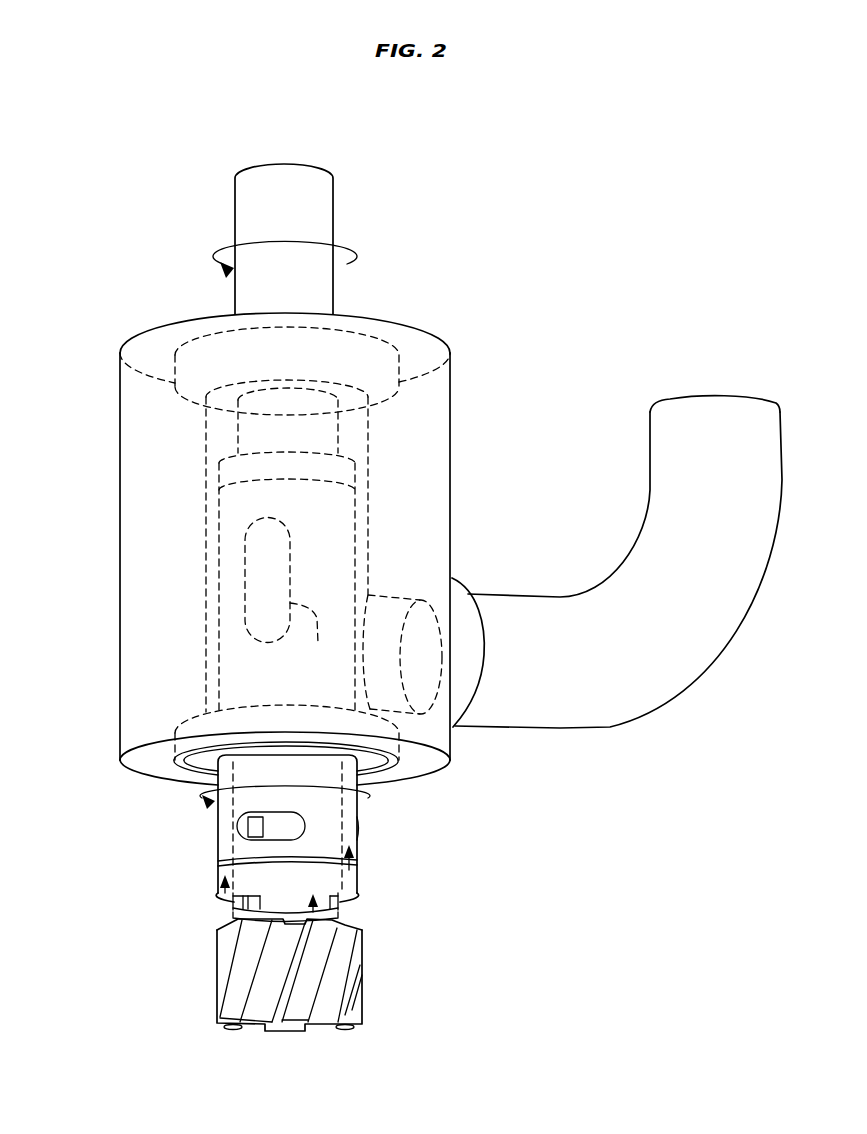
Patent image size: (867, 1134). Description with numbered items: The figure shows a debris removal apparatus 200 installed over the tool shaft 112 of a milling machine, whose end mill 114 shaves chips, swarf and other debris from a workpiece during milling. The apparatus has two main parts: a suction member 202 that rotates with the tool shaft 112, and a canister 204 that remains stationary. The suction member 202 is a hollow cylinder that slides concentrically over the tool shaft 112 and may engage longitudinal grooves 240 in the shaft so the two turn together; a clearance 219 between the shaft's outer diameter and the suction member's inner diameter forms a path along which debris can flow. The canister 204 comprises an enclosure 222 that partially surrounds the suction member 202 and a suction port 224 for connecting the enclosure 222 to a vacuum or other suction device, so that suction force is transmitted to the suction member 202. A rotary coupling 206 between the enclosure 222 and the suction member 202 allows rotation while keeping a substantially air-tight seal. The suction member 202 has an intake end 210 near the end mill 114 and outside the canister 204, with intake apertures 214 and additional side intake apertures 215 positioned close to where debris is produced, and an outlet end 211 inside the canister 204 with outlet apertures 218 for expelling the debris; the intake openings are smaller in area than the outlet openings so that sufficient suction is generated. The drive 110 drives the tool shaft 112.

The rotary drive 110 is at (257, 155).
The tool shaft 112 is at (327, 222).
The end mill 114 is at (258, 988).
The debris removal apparatus 200 is at (601, 238).
The suction member 202 is at (220, 826).
The canister 204 is at (100, 534).
The rotary coupling 206 is at (378, 765).
The intake end 210 is at (355, 880).
The outlet end 211 is at (380, 479).
The intake apertures 214 is at (313, 922).
The additional intake apertures 215 is at (247, 840).
The outlet apertures 218 is at (289, 594).
The clearance 219 is at (358, 862).
The enclosure 222 is at (453, 745).
The suction port 224 is at (458, 616).
The longitudinal grooves 240 is at (235, 910).